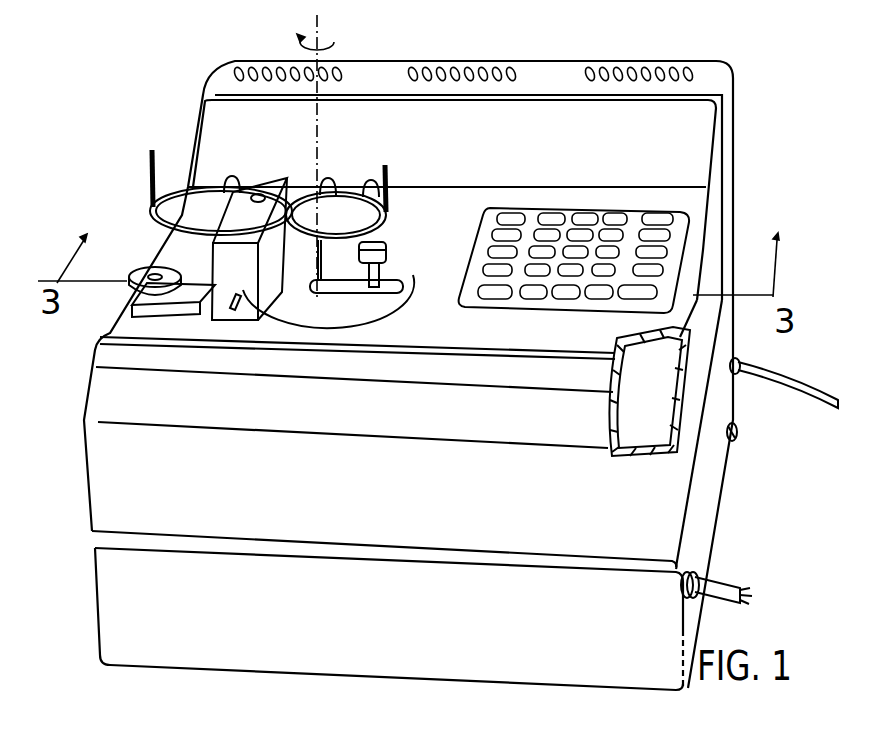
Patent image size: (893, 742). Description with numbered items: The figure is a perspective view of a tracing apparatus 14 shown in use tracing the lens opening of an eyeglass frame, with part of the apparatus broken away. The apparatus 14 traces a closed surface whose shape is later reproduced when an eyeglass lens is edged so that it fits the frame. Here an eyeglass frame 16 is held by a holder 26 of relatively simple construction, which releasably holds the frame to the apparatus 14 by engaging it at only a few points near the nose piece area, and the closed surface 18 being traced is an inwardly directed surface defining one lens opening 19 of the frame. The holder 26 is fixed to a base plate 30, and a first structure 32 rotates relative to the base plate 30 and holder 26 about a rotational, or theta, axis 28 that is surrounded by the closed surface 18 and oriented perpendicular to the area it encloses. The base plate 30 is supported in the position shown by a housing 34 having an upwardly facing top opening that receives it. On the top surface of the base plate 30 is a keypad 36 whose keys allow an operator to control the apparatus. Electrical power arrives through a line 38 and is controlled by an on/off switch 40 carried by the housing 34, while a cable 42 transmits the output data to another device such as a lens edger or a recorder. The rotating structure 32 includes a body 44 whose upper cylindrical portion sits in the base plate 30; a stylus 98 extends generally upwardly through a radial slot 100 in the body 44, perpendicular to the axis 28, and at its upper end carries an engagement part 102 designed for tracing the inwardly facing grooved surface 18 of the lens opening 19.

The tracing apparatus 14 is at (684, 34).
The eyeglass frame 16 is at (153, 218).
The closed surface 18 is at (368, 192).
The lens opening 19 is at (347, 187).
The holder 26 is at (250, 187).
The rotational axis 28 is at (321, 108).
The base plate 30 is at (641, 340).
The first structure 32 is at (380, 315).
The housing 34 is at (723, 208).
The keypad 36 is at (633, 218).
The line 38 is at (772, 376).
The on/off switch 40 is at (740, 430).
The cable 42 is at (718, 584).
The body 44 is at (290, 328).
The stylus 98 is at (388, 257).
The radial slot 100 is at (338, 293).
The engagement part 102 is at (377, 215).